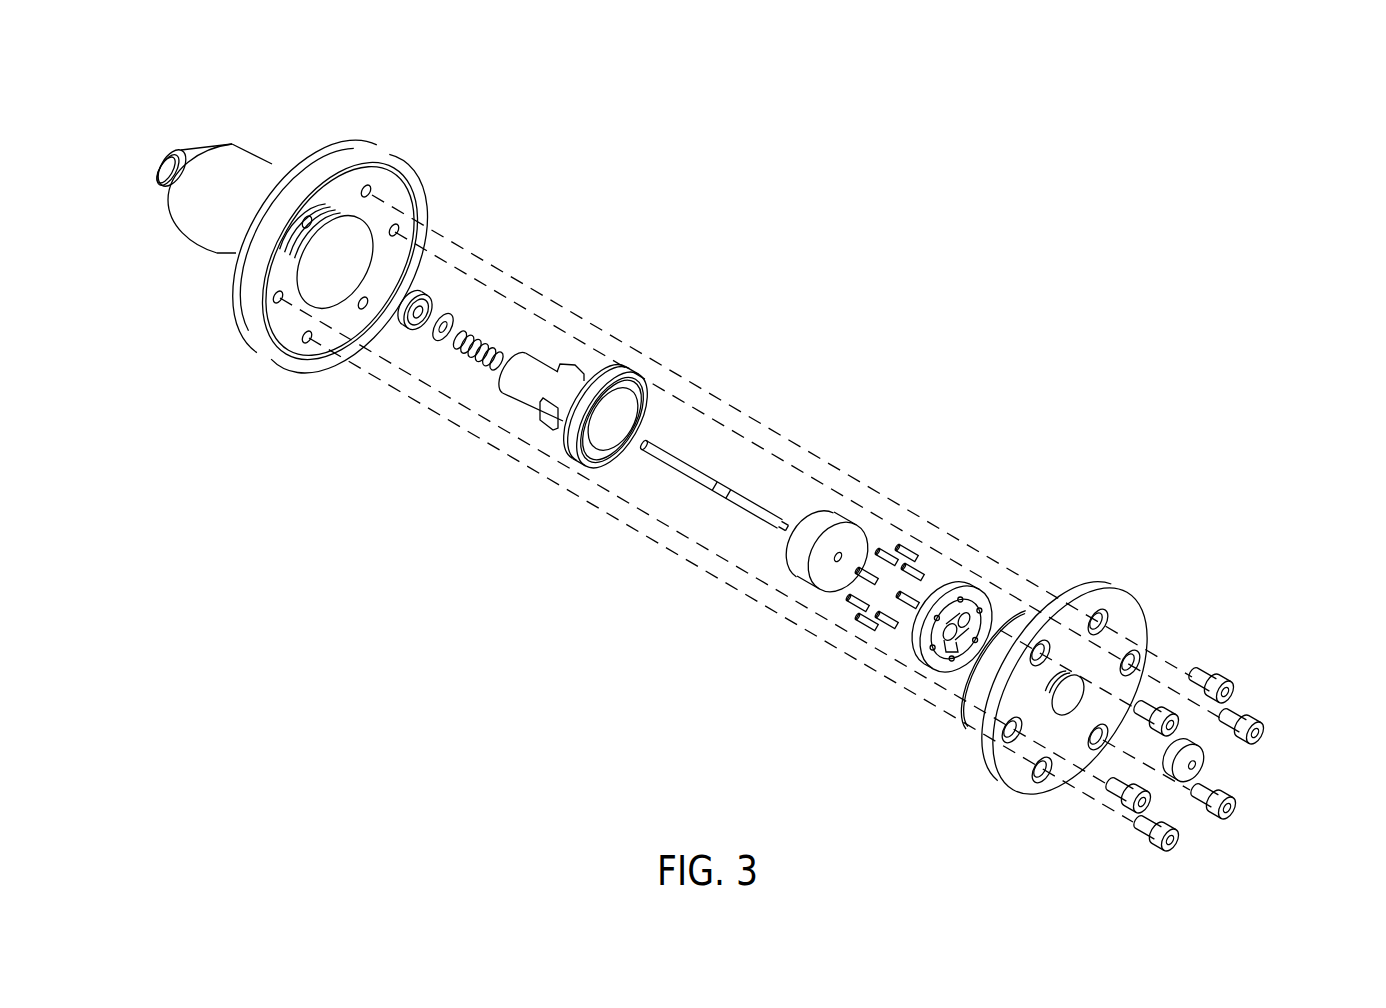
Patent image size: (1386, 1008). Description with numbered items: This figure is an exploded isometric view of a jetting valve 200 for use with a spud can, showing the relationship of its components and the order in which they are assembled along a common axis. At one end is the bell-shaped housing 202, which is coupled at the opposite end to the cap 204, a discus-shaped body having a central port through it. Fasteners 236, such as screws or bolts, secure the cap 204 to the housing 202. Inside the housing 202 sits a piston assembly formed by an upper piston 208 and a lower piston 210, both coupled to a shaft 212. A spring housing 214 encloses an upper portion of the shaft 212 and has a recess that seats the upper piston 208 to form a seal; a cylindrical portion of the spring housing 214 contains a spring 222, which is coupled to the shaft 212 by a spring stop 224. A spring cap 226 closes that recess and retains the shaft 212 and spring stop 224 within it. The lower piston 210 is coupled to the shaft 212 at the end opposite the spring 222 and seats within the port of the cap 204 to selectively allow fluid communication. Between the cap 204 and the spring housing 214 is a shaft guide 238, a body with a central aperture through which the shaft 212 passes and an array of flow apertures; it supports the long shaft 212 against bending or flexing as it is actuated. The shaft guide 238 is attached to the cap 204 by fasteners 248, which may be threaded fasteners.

The jetting valve 200 is at (150, 80).
The housing 202 is at (258, 150).
The cap 204 is at (1130, 625).
The upper piston 208 is at (826, 514).
The lower piston 210 is at (1204, 766).
The shaft 212 is at (692, 464).
The spring housing 214 is at (543, 380).
The spring 222 is at (484, 338).
The spring stop 224 is at (441, 342).
The spring cap 226 is at (425, 294).
The fasteners 236 is at (1264, 722).
The shaft guide 238 is at (976, 592).
The fasteners 248 is at (914, 551).